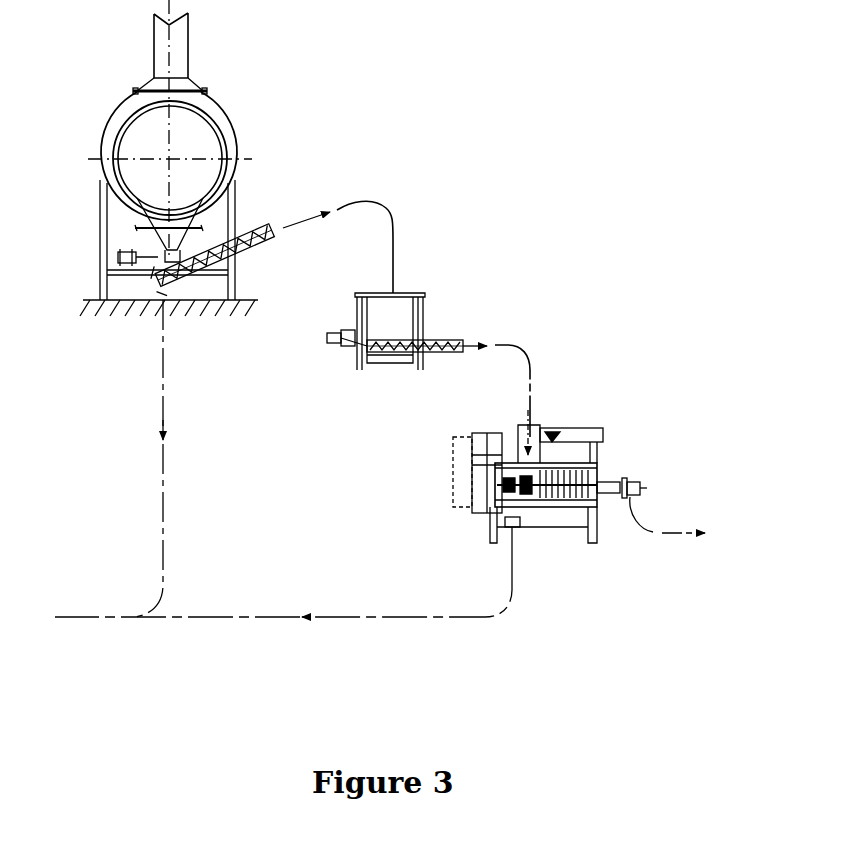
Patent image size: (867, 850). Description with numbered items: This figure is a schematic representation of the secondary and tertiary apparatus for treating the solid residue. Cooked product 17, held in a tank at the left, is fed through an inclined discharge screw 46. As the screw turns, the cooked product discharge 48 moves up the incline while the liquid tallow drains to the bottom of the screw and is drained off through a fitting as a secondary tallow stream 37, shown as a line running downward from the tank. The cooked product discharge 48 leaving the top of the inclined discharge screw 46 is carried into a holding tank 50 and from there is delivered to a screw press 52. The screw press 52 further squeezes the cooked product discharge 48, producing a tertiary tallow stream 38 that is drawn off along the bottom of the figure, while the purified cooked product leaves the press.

The cooked product 17 is at (151, 158).
The secondary tallow stream 37 is at (138, 458).
The tertiary tallow stream 38 is at (283, 615).
The inclined discharge screw 46 is at (245, 235).
The cooked product discharge 48 is at (388, 210).
The holding tank 50 is at (387, 363).
The screw press 52 is at (470, 513).